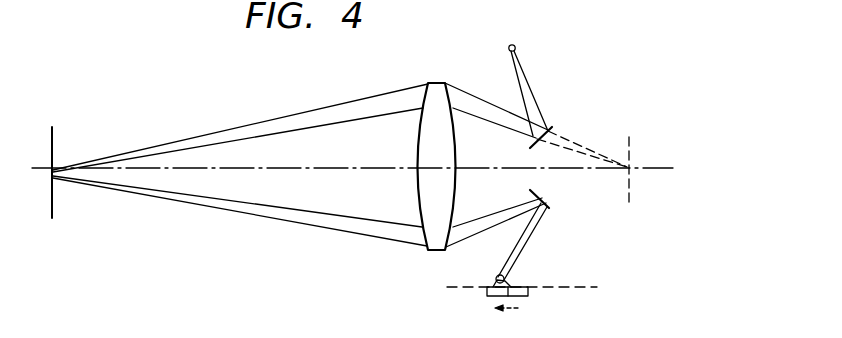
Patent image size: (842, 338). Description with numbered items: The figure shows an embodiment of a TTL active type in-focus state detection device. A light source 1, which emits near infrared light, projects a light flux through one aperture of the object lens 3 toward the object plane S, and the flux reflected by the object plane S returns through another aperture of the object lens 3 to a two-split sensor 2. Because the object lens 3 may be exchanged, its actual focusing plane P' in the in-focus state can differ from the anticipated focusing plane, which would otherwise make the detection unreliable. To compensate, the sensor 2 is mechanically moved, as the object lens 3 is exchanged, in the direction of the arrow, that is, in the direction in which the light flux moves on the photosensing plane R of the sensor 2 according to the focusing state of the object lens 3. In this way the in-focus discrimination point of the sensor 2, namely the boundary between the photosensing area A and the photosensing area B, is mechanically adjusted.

The light source 1 is at (516, 48).
The sensor 2 is at (520, 287).
The object lens 3 is at (438, 245).
The object plane S is at (52, 148).
The actual focusing plane P' is at (615, 192).
The photosensing plane R is at (592, 290).
The photosensing area A is at (492, 297).
The photosensing area B is at (525, 297).